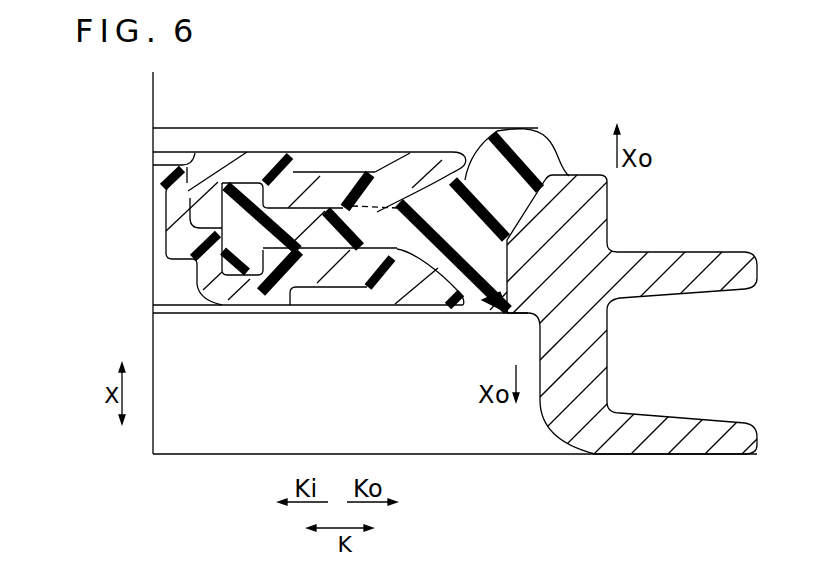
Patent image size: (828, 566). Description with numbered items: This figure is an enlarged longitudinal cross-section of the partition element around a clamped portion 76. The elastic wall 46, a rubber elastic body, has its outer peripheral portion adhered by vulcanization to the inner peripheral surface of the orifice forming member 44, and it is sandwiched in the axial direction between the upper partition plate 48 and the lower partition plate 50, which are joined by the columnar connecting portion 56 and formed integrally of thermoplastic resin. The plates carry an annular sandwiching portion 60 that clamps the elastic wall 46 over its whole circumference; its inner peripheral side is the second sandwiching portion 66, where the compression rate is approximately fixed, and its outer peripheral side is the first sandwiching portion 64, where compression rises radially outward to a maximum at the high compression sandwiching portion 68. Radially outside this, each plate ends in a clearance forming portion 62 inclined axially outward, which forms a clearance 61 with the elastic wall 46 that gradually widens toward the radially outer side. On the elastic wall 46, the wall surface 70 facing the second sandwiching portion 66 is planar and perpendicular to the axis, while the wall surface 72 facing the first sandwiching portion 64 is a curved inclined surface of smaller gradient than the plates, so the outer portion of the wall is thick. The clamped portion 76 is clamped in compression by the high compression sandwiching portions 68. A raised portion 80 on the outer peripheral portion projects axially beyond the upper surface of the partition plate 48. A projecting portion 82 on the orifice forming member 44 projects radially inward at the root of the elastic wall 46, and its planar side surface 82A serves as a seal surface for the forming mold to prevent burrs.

The orifice forming member 44 is at (705, 268).
The elastic wall 46 is at (513, 180).
The partition plate 48 is at (218, 152).
The partition plate 50 is at (227, 294).
The connecting portion 56 is at (178, 248).
The sandwiching portion 60 is at (267, 205).
The clearance 61 is at (464, 178).
The clearance forming portion 62 is at (455, 145).
The first sandwiching portion 64 is at (413, 200).
The second sandwiching portion 66 is at (333, 218).
The high compression sandwiching portion 68 is at (428, 210).
The wall surface 70 is at (325, 252).
The wall surface 72 is at (391, 262).
The clamped portion 76 is at (390, 230).
The raised portion 80 is at (541, 131).
The projecting portion 82 is at (507, 313).
The side surface 82A is at (540, 326).